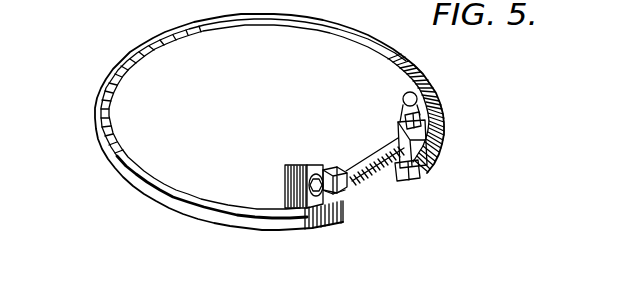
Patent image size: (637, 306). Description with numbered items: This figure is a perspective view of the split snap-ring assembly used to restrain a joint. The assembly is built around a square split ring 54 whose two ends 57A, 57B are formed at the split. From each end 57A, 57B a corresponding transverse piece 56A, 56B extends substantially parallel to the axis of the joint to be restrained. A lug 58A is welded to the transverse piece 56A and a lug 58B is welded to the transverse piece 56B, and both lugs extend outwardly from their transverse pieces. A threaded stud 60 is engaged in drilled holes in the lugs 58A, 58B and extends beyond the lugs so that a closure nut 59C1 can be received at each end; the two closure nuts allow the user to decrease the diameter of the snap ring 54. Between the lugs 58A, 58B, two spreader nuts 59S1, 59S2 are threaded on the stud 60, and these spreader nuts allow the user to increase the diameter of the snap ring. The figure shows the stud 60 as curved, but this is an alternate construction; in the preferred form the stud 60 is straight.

The square split ring 54 is at (110, 157).
The transverse piece 56A is at (285, 183).
The transverse piece 56B is at (430, 77).
The end 57A is at (343, 214).
The end 57B is at (403, 181).
The lug 58A is at (333, 165).
The lug 58B is at (437, 147).
The closure nut 59C1 is at (320, 174).
The spreader nut 59S1 is at (324, 191).
The spreader nut 59S2 is at (397, 143).
The threaded stud 60 is at (373, 160).